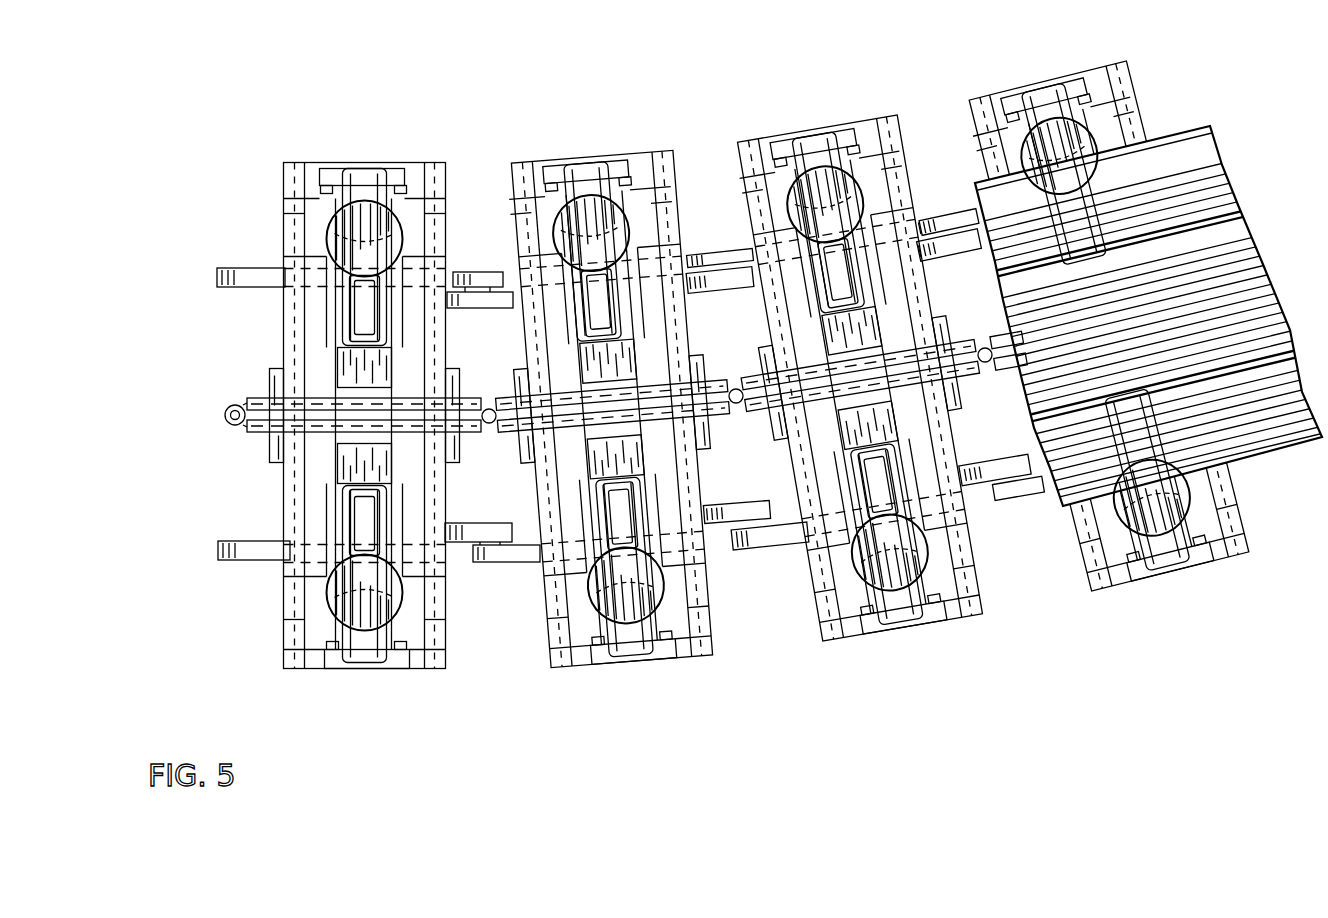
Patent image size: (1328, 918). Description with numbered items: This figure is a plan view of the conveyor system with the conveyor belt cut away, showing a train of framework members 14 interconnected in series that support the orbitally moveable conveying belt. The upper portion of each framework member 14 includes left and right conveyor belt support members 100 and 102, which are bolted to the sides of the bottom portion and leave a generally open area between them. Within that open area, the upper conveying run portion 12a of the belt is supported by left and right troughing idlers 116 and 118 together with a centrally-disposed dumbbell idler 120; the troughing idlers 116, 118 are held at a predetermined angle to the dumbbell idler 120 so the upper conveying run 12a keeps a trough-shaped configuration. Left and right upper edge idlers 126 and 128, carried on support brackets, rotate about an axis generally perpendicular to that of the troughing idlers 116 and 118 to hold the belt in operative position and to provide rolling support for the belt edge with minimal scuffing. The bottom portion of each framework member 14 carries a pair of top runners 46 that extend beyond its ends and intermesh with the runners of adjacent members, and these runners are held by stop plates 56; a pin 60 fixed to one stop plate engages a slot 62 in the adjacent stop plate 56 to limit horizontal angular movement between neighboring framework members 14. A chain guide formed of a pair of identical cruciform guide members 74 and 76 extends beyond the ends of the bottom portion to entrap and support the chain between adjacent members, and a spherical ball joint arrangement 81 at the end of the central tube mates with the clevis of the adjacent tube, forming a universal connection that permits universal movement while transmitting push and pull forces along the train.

The framework member 14 is at (620, 142).
The left conveyor belt support member 100 is at (310, 162).
The right conveyor belt support member 102 is at (295, 665).
The left upper edge idler 126 is at (383, 245).
The right upper edge idler 128 is at (380, 596).
The dumbbell idler 120 is at (345, 360).
The left troughing idler 116 is at (820, 278).
The right troughing idler 118 is at (855, 480).
The top runner 46 is at (217, 278).
The stop plate 56 is at (458, 272).
The pin 60 is at (485, 302).
The slot 62 is at (480, 270).
The guide member 76 is at (253, 398).
The guide member 74 is at (255, 433).
The spherical ball joint arrangement 81 is at (225, 415).
The upper conveying run portion 12a is at (1215, 195).